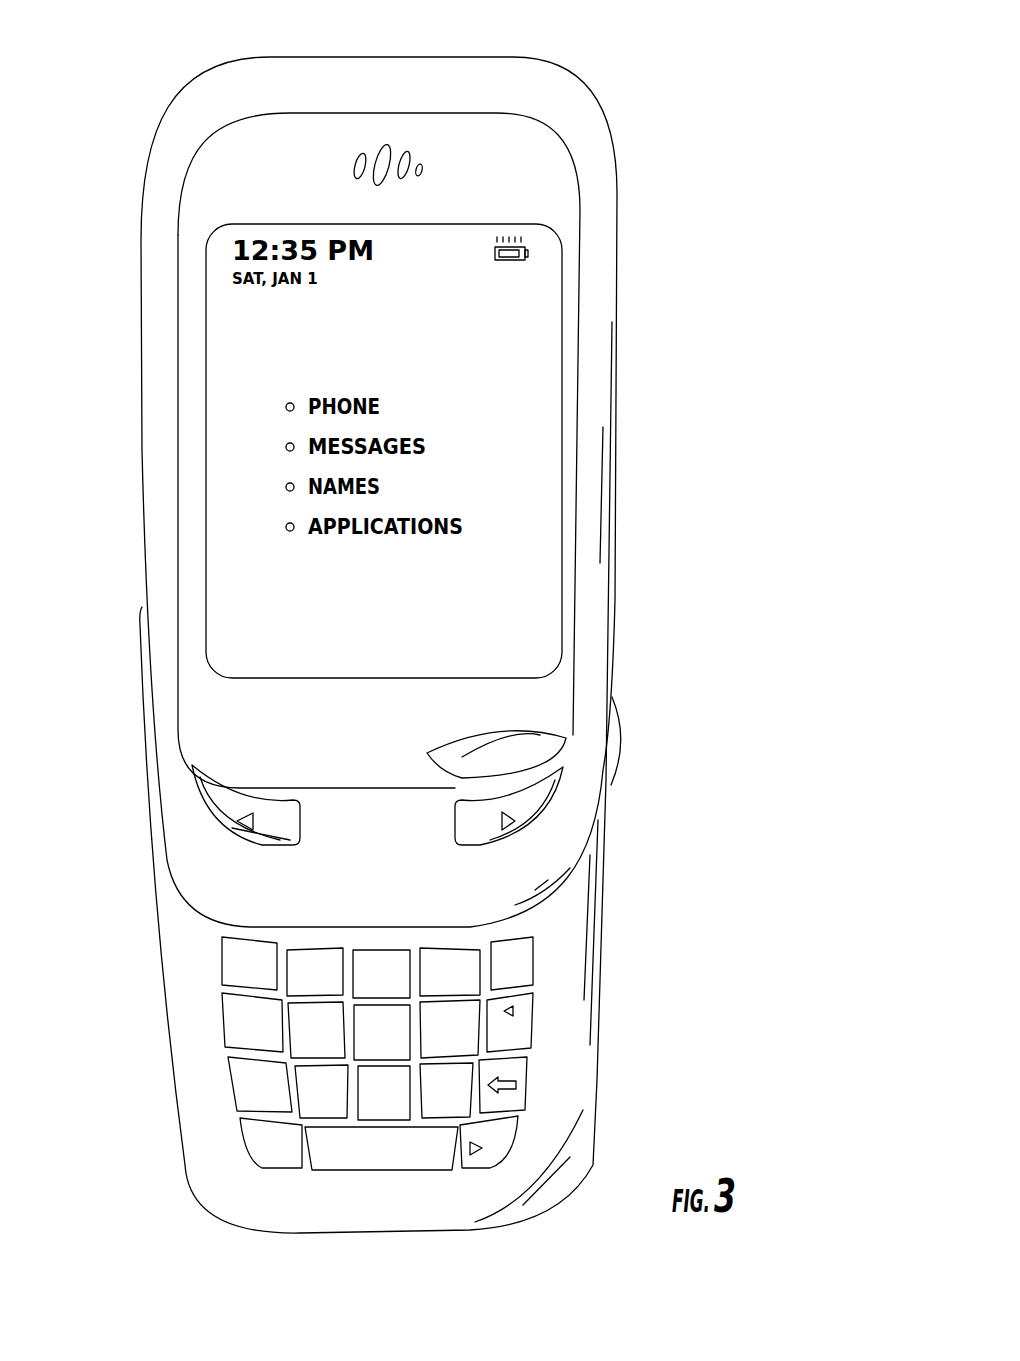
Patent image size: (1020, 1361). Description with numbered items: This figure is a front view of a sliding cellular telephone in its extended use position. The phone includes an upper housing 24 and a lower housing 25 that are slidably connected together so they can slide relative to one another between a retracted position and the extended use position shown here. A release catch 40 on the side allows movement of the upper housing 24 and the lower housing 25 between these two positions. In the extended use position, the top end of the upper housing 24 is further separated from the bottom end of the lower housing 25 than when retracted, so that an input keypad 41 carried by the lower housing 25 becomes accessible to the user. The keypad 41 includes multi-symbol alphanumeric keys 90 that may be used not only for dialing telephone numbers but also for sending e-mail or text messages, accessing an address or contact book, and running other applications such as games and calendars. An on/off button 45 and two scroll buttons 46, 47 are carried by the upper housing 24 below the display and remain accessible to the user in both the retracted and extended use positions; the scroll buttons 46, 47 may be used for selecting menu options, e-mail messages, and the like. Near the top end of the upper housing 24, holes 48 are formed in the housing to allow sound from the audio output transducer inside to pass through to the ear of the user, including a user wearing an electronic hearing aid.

The upper housing 24 is at (607, 125).
The lower housing 25 is at (605, 928).
The release catch 40 is at (625, 745).
The input keypad 41 is at (368, 1055).
The on/off button 45 is at (545, 735).
The scroll button 46 is at (212, 800).
The scroll button 47 is at (533, 807).
The holes 48 is at (390, 148).
The multi-symbol alphanumeric keys 90 is at (222, 958).